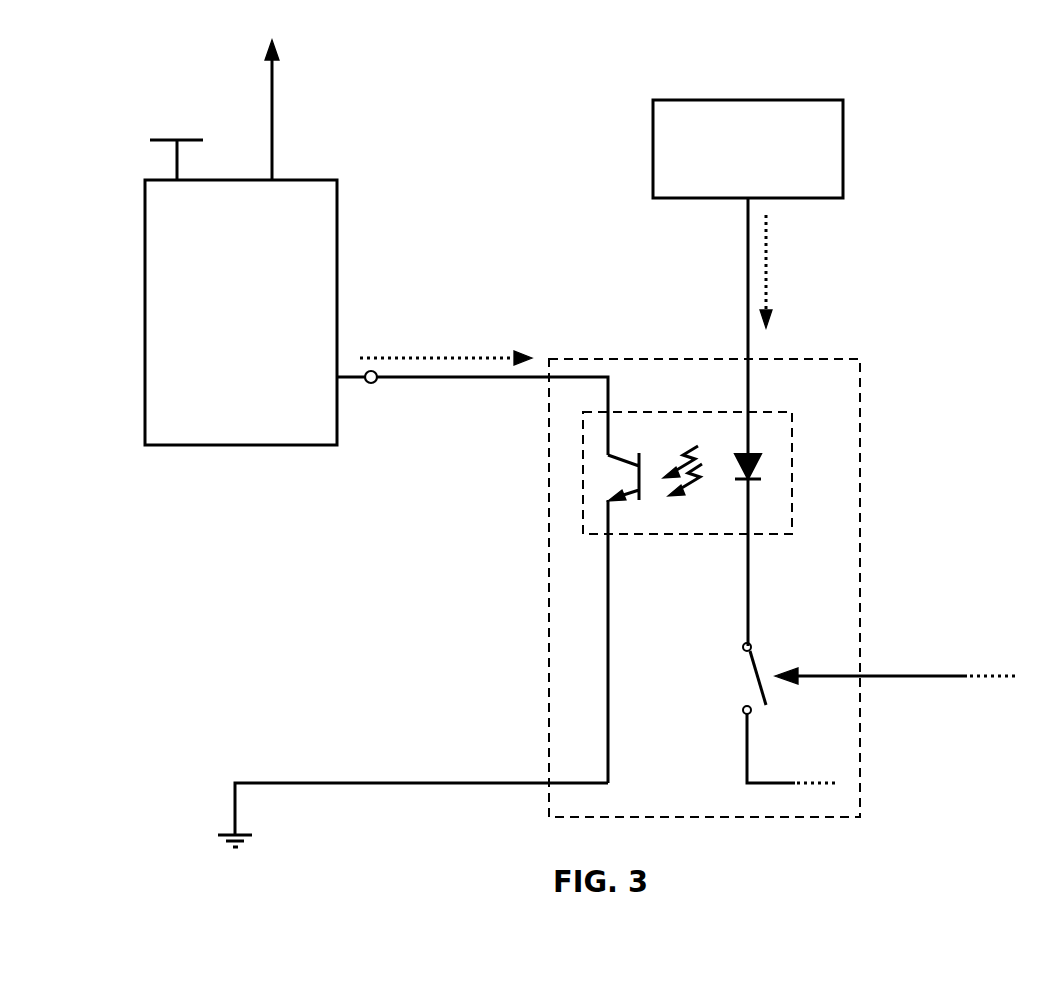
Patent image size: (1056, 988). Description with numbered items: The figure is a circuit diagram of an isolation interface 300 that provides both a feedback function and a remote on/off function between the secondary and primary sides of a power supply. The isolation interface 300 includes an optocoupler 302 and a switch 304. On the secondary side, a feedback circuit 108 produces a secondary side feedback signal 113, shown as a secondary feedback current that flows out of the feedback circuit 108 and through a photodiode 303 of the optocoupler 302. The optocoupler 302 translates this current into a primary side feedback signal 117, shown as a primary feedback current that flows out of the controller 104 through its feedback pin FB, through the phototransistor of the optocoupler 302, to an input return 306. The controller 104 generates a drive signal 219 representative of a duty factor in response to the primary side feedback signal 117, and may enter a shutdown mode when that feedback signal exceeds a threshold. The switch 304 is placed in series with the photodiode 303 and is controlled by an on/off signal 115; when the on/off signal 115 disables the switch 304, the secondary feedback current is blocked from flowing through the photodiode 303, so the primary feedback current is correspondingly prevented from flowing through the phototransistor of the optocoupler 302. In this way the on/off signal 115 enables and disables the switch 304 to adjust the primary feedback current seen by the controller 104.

The controller 104 is at (240, 460).
The drive signal 219 is at (283, 125).
The feedback circuit 108 is at (640, 153).
The secondary side feedback signal 113 is at (778, 292).
The primary side feedback signal 117 is at (450, 345).
The isolation interface 300 is at (866, 440).
The optocoupler 302 is at (678, 540).
The photodiode 303 is at (770, 475).
The switch 304 is at (745, 676).
The on/off signal 115 is at (922, 663).
The input return 306 is at (209, 835).